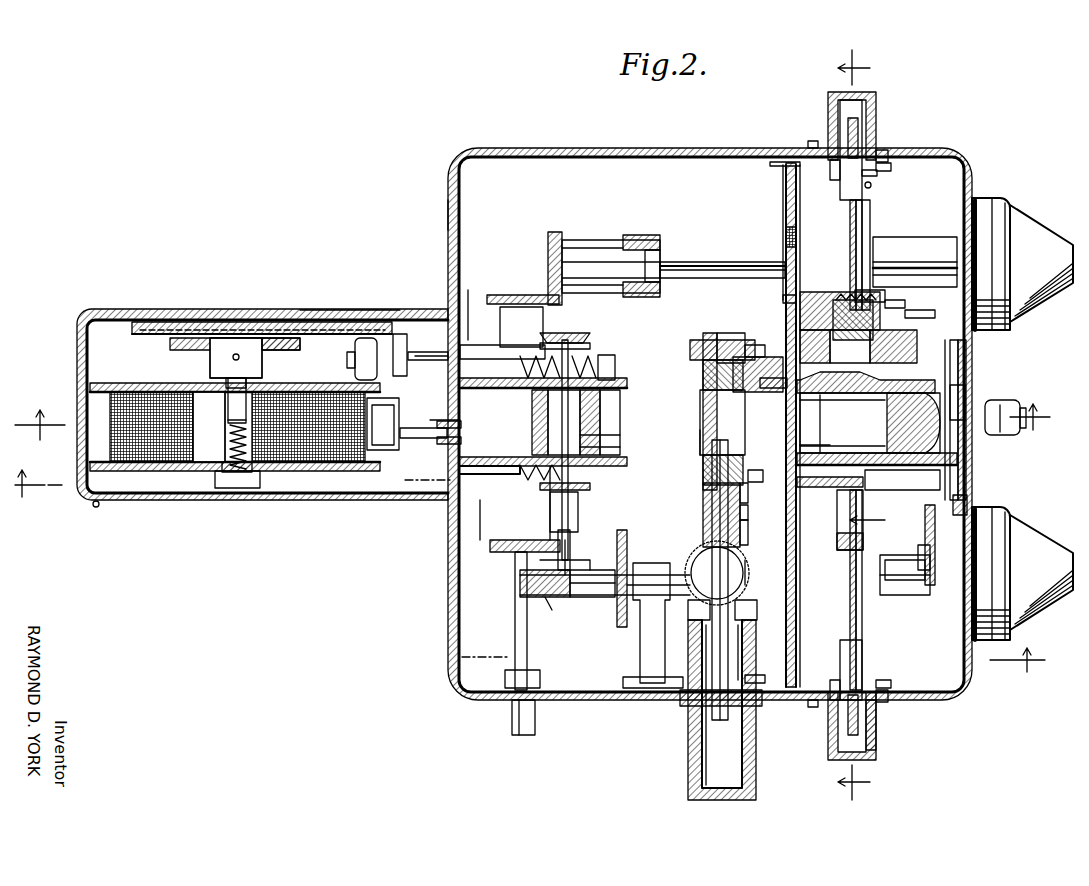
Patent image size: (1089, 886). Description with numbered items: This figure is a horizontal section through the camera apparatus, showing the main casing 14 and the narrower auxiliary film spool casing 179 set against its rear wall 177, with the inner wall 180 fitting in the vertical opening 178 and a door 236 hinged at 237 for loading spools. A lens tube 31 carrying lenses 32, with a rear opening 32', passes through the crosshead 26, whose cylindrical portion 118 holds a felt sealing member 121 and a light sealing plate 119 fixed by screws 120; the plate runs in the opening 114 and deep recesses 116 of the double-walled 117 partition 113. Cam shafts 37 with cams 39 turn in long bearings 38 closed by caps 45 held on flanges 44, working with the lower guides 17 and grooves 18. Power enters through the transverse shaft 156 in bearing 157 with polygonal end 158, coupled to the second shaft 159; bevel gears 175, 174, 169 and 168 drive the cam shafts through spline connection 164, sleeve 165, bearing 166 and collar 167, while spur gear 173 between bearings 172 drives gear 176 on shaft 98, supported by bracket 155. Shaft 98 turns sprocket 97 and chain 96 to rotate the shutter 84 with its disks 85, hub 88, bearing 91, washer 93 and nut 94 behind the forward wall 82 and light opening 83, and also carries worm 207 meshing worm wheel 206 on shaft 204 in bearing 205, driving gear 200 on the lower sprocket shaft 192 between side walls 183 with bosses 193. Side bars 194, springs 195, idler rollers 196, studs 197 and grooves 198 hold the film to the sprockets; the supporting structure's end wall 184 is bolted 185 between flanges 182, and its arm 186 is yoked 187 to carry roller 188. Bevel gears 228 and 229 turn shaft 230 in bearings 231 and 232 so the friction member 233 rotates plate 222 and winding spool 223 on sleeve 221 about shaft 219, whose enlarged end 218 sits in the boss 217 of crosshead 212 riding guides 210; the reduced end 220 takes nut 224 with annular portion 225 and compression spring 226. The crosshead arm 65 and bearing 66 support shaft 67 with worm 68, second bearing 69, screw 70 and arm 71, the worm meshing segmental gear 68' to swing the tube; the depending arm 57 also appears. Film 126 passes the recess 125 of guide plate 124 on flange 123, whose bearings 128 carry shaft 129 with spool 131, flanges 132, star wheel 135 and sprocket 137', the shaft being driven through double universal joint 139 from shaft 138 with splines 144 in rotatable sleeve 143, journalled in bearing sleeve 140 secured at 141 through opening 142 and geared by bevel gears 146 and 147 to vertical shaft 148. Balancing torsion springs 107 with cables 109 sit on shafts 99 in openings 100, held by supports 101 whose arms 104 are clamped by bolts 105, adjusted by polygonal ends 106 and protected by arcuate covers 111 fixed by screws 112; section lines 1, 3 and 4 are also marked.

The casing 14 is at (967, 692).
The door 236 is at (304, 500).
The auxiliary film spool casing 179 is at (355, 309).
The hinge 237 is at (97, 508).
The rear wall 177 is at (448, 213).
The parallel guides 210 is at (210, 322).
The bearing 232 is at (402, 334).
The inner wall 180 is at (432, 352).
The shaft 230 is at (424, 355).
The friction driving member 233 is at (355, 348).
The crosshead 212 is at (195, 350).
The recessed boss 217 is at (262, 358).
The enlarged inner end 218 is at (248, 381).
The plate 222 is at (328, 385).
The winding spool 223 is at (326, 470).
The annular portion 225 is at (270, 462).
The sleeve 221 is at (253, 432).
The shaft 219 is at (246, 405).
The reduced outer end 220 is at (248, 420).
The compression spring 226 is at (248, 445).
The nut 224 is at (215, 480).
The roller 188 is at (392, 398).
The parallel flanges 182 is at (444, 440).
The arm 186 is at (424, 438).
The end wall 184 is at (440, 419).
The yoke 187 is at (408, 480).
The vertical opening 178 is at (468, 296).
The bevel gear 169 is at (527, 295).
The bevel gear 168 is at (557, 232).
The sleeve 165 is at (642, 238).
The bearing 166 is at (632, 235).
The collar 167 is at (660, 242).
The spline connection 164 is at (682, 262).
The cam shafts 37 is at (722, 262).
The second shaft 159 is at (518, 347).
The bearing 231 is at (480, 345).
The bevel gear 229 is at (558, 333).
The bevel gear 228 is at (590, 342).
The tension springs 195 is at (578, 372).
The side bars 194 is at (500, 482).
The groove 198 is at (615, 372).
The side walls 183 is at (627, 383).
The stud 197 is at (600, 400).
The idler rollers 196 is at (620, 420).
The lower shaft 192 is at (620, 435).
The bosses 193 is at (620, 447).
The bolts 185 is at (486, 468).
The gear 200 is at (590, 486).
The bearing 205 is at (578, 508).
The shaft 204 is at (572, 540).
The bevel gear 174 is at (570, 556).
The bevel gear 175 is at (500, 553).
The transverse shaft 156 is at (515, 617).
The bearing 157 is at (540, 676).
The polygonal end 158 is at (530, 735).
The worm 207 is at (556, 597).
The worm wheel 206 is at (592, 597).
The gear 176 is at (627, 545).
The bearings 172 is at (633, 575).
The spur gear 173 is at (640, 630).
The bracket 155 is at (640, 678).
The shaft 138 is at (705, 555).
The splines 144 is at (745, 565).
The double universal joint 139 is at (703, 502).
The screws 120 is at (748, 493).
The flange 123 is at (752, 512).
The light sealing plate 119 is at (748, 525).
The bevel gear 147 is at (688, 604).
The vertical shaft 148 is at (757, 604).
The rotatable sleeve 143 is at (688, 763).
The bearing sleeve 140 is at (688, 641).
The bevel gear 146 is at (755, 640).
The securing means 141 is at (748, 676).
The opening 142 is at (683, 700).
The flanges 132 is at (700, 345).
The spool 131 is at (712, 333).
The star wheel 135 is at (730, 340).
The bearing 66 is at (752, 345).
The film guide plate 124 is at (760, 366).
The bearings 128 is at (704, 472).
The shaft 129 is at (700, 412).
The film engaging sprocket 137' is at (680, 442).
The arm 65 is at (786, 318).
The opening 114 is at (783, 299).
The double wall 117 is at (786, 185).
The deep recesses 116 is at (786, 210).
The partition 113 is at (781, 235).
The arcuate cover 111 is at (828, 752).
The cable 109 is at (860, 750).
The opening 100 is at (812, 707).
The support 101 is at (880, 660).
The screws 112 is at (885, 702).
The polygonal end 106 is at (892, 678).
The shaft 99 is at (830, 685).
The arms 104 is at (877, 173).
The bolts 105 is at (871, 185).
The lower guides 17 is at (850, 635).
The guide groove 18 is at (850, 600).
The cams 39 is at (895, 560).
The bearing 38 is at (910, 252).
The worm 68 is at (840, 284).
The screw 70 is at (885, 296).
The second bearing 69 is at (905, 306).
The arm 71 is at (920, 318).
The shaft 67 is at (912, 350).
The sealing member 121 is at (860, 453).
The segmental gear 68' is at (885, 423).
The film 126 is at (815, 415).
The recess 125 is at (812, 445).
The opening 32' is at (877, 447).
The lens tube 31 is at (863, 482).
The lenses 32 is at (902, 485).
The cylindrical portion 118 is at (837, 521).
The depending arm 57 is at (837, 545).
The crosshead 26 is at (874, 514).
The chain 96 is at (927, 540).
The sprocket 97 is at (920, 556).
The shaft 98 is at (900, 595).
The shutter disks 85 is at (955, 375).
The shutter 84 is at (960, 385).
The light opening 83 is at (966, 480).
The hub 88 is at (966, 400).
The forward wall 82 is at (967, 505).
The nut 94 is at (1018, 406).
The bearing 91 is at (997, 436).
The cup shaped washer 93 is at (1021, 430).
The annular flange 44 is at (1005, 510).
The cap 45 is at (1040, 540).
The torsion spring 107 is at (878, 720).
The section line 4 is at (854, 423).
The section line 3 is at (531, 449).
The section line 1 is at (1020, 660).